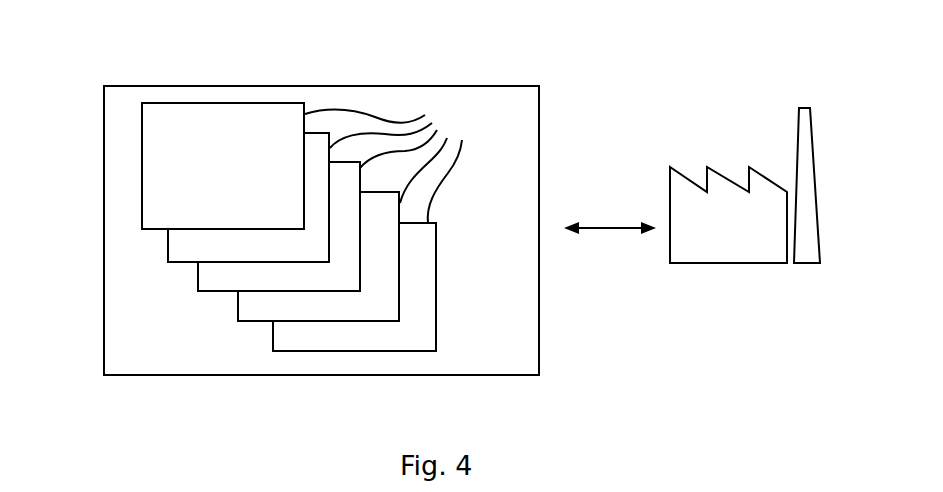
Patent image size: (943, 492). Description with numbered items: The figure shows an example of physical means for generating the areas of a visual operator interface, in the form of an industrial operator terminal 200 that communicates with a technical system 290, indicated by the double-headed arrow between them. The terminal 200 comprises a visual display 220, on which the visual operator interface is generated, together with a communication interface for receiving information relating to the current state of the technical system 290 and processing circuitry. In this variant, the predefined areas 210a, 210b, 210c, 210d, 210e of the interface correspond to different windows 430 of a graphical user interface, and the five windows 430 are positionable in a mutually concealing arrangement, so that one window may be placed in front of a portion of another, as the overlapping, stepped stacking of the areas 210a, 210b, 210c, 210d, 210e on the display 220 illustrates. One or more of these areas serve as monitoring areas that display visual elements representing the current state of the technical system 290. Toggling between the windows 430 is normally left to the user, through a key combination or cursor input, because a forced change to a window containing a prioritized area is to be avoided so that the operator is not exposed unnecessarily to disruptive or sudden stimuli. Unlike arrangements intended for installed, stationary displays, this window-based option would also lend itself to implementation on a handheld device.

The industrial operator terminal 200 is at (78, 86).
The visual display 220 is at (198, 375).
The predefined area 210a is at (255, 179).
The predefined area 210b is at (312, 257).
The predefined area 210c is at (348, 288).
The predefined area 210d is at (386, 319).
The predefined area 210e is at (424, 349).
The windows 430 is at (396, 164).
The technical system 290 is at (733, 263).